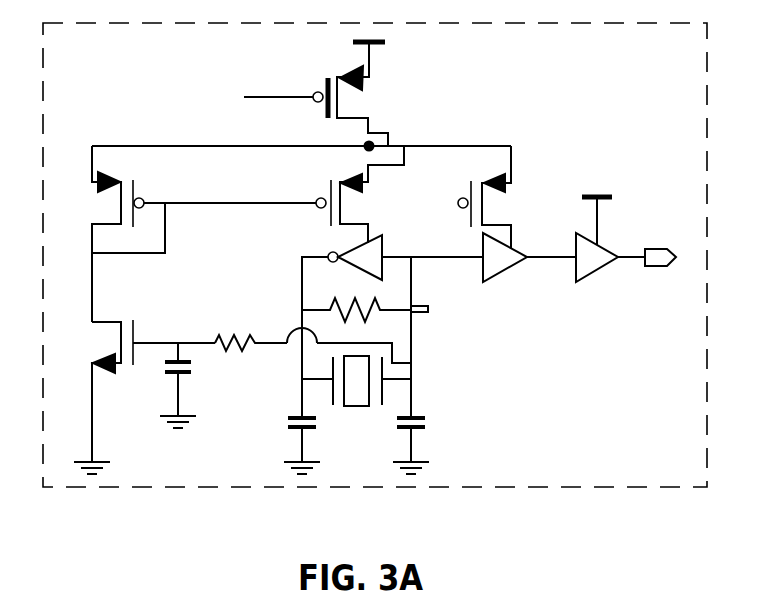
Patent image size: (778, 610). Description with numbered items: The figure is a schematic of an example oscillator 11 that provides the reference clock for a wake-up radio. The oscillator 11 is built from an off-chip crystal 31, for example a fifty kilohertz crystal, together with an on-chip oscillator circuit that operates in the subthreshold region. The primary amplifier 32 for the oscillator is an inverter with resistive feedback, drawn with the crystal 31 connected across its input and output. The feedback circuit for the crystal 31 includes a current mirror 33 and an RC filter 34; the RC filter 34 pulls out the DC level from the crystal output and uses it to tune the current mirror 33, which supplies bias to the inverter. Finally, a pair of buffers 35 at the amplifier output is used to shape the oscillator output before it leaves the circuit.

The oscillator 11 is at (708, 85).
The crystal 31 is at (355, 407).
The primary amplifier 32 is at (385, 240).
The current mirror 33 is at (136, 107).
The RC filter 34 is at (214, 367).
The pair of buffers 35 is at (553, 298).